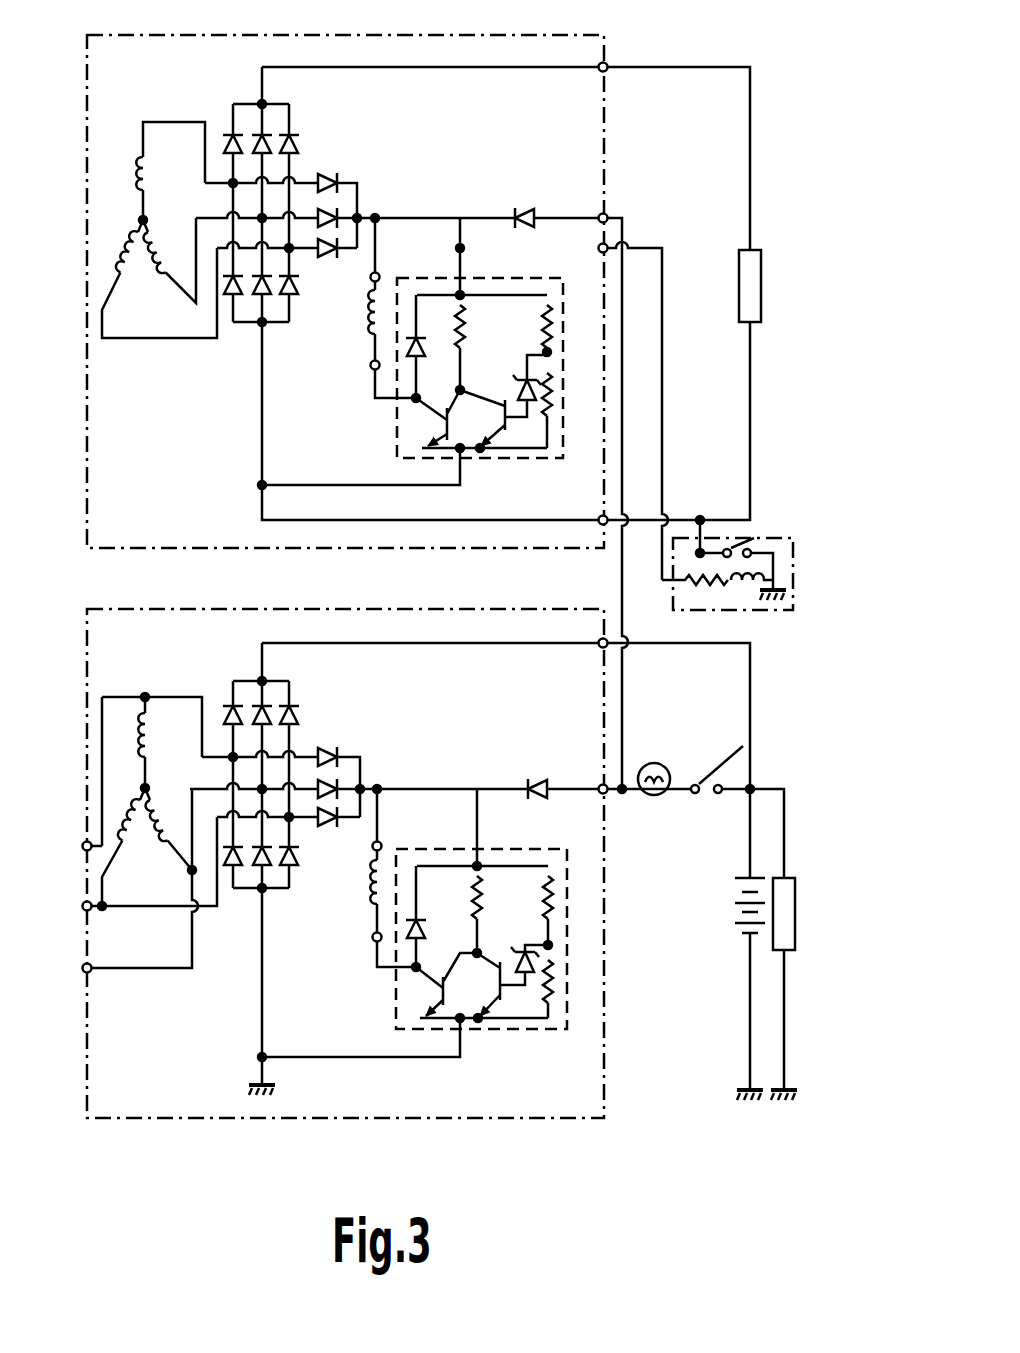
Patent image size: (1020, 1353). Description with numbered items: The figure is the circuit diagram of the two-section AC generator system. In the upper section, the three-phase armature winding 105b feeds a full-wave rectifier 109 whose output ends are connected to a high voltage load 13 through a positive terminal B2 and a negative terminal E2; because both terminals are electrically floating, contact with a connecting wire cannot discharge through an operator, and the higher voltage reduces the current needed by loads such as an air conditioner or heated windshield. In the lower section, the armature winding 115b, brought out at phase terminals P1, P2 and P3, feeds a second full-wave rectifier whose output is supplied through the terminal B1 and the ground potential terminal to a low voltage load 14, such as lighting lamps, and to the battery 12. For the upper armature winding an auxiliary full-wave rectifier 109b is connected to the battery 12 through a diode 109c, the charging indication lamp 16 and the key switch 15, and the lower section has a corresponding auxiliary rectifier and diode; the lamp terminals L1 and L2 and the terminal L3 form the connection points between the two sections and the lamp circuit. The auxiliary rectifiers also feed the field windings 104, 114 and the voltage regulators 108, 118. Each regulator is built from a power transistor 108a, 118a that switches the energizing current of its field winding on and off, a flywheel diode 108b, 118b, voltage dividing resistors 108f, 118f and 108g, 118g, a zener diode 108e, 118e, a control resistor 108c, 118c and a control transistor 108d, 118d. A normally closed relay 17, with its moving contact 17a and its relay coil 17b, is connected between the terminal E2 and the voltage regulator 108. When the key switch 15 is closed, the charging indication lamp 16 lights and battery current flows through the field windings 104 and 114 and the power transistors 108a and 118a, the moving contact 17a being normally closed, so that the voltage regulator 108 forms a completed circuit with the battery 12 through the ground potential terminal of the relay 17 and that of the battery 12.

The battery 12 is at (745, 935).
The high voltage load 13 is at (752, 272).
The low voltage load 14 is at (790, 908).
The key switch 15 is at (722, 776).
The charging indication lamp 16 is at (664, 766).
The normally closed relay 17 is at (761, 600).
The moving contact 17a is at (756, 546).
The relay coil 17b is at (735, 585).
The field winding 104 is at (365, 337).
The armature winding 105b is at (152, 340).
The voltage regulator 108 is at (499, 387).
The power transistor 108a is at (440, 435).
The flywheel diode 108b is at (410, 365).
The control resistor 108c is at (463, 330).
The control transistor 108d is at (488, 442).
The zener diode 108e is at (532, 392).
The voltage dividing resistor 108f is at (550, 330).
The voltage dividing resistor 108g is at (550, 400).
The full-wave rectifier 109 is at (252, 325).
The auxiliary full-wave rectifier 109b is at (340, 173).
The diode 109c is at (528, 210).
The field winding 114 is at (372, 912).
The armature winding 115b is at (142, 908).
The voltage regulator 118 is at (485, 980).
The power transistor 118a is at (430, 1005).
The flywheel diode 118b is at (410, 945).
The control resistor 118c is at (480, 900).
The control transistor 118d is at (487, 1012).
The zener diode 118e is at (530, 965).
The voltage dividing resistor 118f is at (551, 905).
The voltage dividing resistor 118g is at (551, 990).
The terminal B1 is at (600, 646).
The positive terminal B2 is at (606, 64).
The lamp terminal L1 is at (606, 792).
The lamp terminal L2 is at (606, 215).
The terminal L3 is at (606, 245).
The negative terminal E2 is at (600, 525).
The phase terminal P1 is at (70, 846).
The phase terminal P2 is at (70, 906).
The phase terminal P3 is at (70, 968).